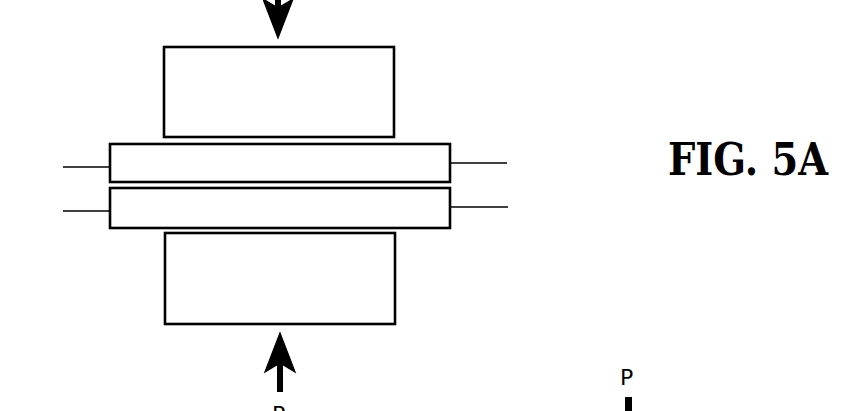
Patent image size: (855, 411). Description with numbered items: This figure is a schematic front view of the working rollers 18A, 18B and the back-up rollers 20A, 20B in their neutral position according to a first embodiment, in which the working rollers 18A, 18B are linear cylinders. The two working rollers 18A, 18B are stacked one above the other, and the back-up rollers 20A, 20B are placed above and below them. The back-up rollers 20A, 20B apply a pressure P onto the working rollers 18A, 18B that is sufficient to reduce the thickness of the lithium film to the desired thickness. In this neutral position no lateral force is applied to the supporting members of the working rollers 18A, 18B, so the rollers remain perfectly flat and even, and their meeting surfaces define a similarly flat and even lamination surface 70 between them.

The back-up roller 20B is at (370, 79).
The back-up roller 20A is at (372, 275).
The working roller 18B is at (427, 160).
The working roller 18A is at (427, 215).
The lamination surface 70 is at (298, 182).